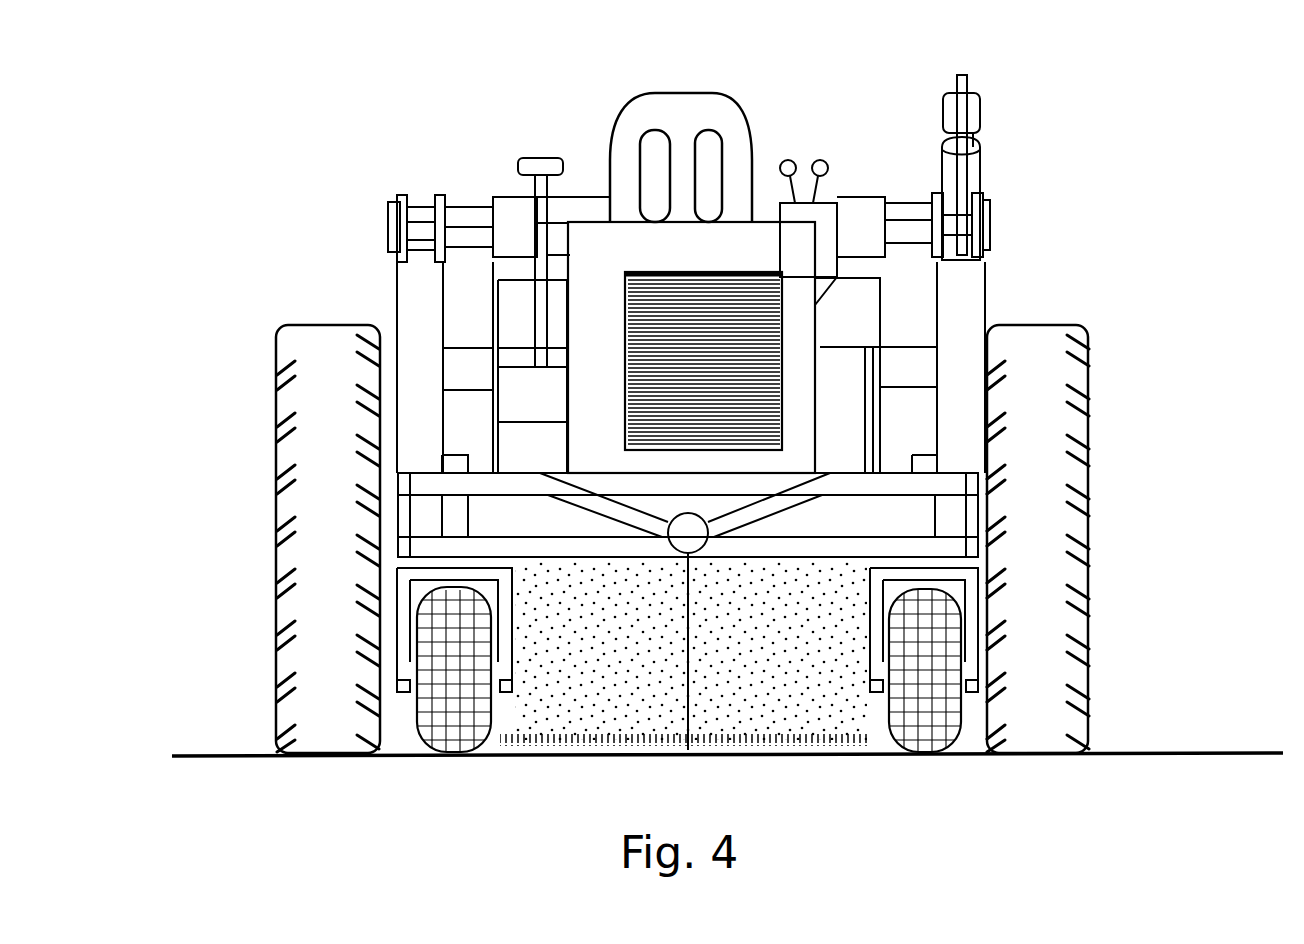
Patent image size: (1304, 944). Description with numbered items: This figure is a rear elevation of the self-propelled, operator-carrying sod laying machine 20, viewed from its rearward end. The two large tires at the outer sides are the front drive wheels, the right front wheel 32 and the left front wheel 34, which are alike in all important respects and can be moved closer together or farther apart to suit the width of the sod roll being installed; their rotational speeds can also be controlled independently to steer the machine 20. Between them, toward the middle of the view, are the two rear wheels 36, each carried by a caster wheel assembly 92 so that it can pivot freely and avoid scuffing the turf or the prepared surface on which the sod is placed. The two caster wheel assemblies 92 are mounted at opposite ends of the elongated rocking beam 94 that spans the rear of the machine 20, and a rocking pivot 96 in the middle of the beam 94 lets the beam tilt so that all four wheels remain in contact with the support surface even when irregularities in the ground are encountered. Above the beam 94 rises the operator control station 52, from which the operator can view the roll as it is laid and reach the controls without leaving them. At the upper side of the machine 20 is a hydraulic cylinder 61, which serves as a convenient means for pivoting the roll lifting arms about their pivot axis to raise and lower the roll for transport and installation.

The sod laying machine 20 is at (1152, 191).
The right front wheel 32 is at (1055, 738).
The left front wheel 34 is at (325, 738).
The rear wheel 36 is at (462, 740).
The operator control station 52 is at (622, 63).
The hydraulic cylinder 61 is at (980, 178).
The caster wheel assembly 92 is at (935, 562).
The rocking beam 94 is at (806, 545).
The rocking pivot 96 is at (690, 531).